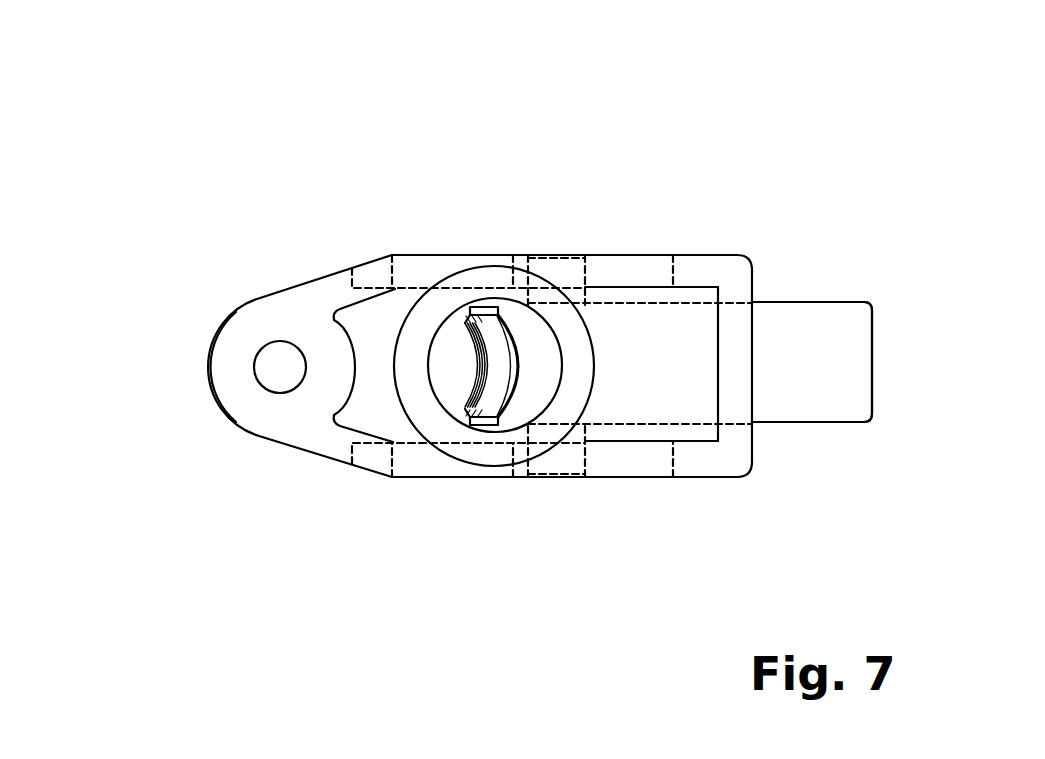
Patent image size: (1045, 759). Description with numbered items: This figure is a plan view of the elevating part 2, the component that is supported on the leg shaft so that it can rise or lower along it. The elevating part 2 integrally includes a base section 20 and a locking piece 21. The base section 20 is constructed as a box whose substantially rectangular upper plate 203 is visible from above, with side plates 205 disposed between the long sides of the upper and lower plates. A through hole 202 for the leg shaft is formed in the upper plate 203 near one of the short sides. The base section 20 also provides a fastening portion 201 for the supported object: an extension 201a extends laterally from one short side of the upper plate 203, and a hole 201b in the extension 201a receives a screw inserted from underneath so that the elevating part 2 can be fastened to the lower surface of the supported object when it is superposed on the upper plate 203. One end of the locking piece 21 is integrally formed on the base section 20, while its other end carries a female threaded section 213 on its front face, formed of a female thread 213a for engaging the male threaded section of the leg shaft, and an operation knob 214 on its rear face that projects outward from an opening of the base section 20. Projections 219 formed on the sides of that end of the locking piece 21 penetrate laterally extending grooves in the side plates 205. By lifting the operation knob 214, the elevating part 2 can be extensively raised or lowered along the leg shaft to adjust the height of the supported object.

The elevating part 2 is at (652, 158).
The base section 20 is at (455, 478).
The locking piece 21 is at (812, 317).
The fastening portion 201 is at (272, 423).
The extension 201a is at (225, 383).
The hole 201b is at (275, 353).
The through hole 202 is at (447, 330).
The upper plate 203 is at (662, 412).
The side plate 205 is at (567, 255).
The female threaded section 213 is at (467, 352).
The female thread 213a is at (462, 395).
The operation knob 214 is at (843, 345).
The projection 219 is at (549, 265).